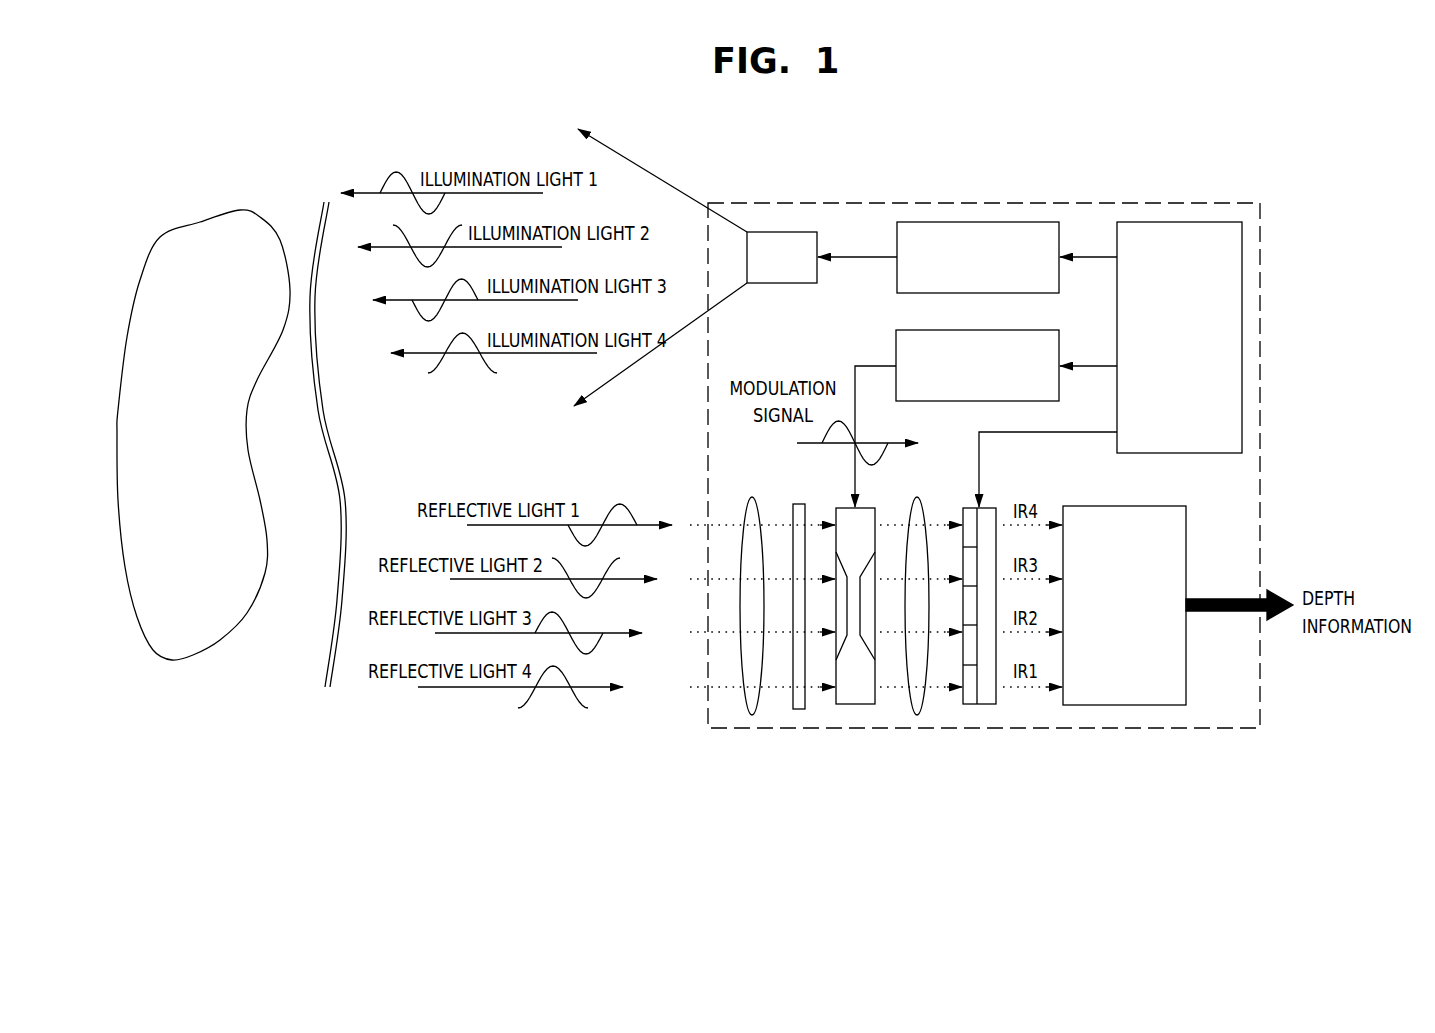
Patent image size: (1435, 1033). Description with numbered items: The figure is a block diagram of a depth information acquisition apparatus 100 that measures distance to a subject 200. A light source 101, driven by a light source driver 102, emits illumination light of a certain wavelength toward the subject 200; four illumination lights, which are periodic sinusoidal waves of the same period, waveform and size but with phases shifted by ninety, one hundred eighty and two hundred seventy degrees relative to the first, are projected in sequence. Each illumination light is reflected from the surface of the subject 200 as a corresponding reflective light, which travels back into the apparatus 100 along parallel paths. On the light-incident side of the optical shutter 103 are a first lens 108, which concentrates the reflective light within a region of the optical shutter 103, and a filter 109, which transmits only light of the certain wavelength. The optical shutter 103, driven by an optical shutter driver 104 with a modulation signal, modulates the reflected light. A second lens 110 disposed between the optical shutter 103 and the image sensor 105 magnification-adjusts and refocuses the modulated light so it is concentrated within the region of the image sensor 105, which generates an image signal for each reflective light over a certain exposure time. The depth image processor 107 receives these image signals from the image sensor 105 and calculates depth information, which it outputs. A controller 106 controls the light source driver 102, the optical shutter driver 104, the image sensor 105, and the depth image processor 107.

The depth information acquisition apparatus 100 is at (1087, 203).
The light source 101 is at (781, 232).
The light source driver 102 is at (977, 222).
The optical shutter 103 is at (855, 704).
The optical shutter driver 104 is at (896, 346).
The image sensor 105 is at (979, 704).
The controller 106 is at (1180, 222).
The depth image processor 107 is at (1124, 705).
The first lens 108 is at (752, 715).
The filter 109 is at (797, 709).
The second lens 110 is at (917, 715).
The subject 200 is at (211, 210).